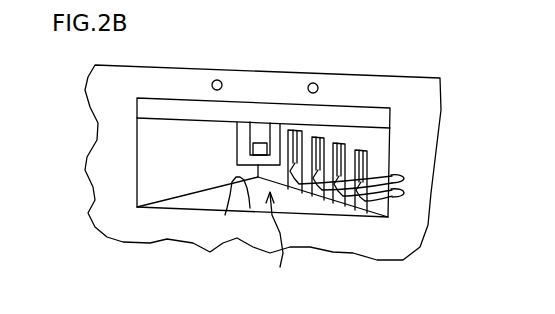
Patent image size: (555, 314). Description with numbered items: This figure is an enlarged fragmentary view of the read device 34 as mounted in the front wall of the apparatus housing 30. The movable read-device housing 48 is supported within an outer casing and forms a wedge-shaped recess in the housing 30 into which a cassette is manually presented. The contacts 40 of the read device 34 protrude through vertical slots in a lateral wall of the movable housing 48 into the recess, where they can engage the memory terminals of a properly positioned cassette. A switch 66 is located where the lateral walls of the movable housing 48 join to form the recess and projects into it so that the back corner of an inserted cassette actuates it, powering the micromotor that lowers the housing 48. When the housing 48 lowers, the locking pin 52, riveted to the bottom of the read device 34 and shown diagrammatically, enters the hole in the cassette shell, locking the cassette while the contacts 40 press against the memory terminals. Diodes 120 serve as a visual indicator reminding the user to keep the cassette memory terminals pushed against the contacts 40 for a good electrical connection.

The housing 30 is at (337, 240).
The read device 34 is at (286, 240).
The contacts 40 is at (354, 171).
The movable read-device housing 48 is at (367, 137).
The locking pin 52 is at (237, 200).
The switch 66 is at (260, 130).
The diodes 120 is at (218, 79).